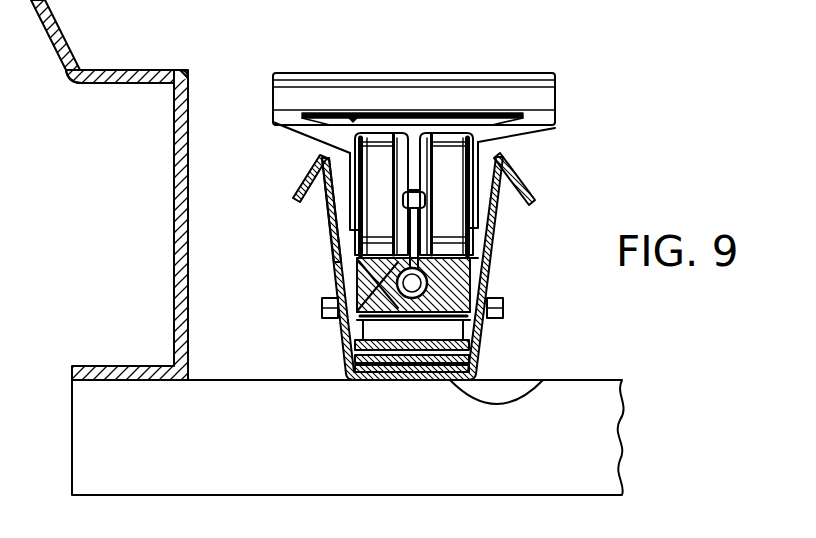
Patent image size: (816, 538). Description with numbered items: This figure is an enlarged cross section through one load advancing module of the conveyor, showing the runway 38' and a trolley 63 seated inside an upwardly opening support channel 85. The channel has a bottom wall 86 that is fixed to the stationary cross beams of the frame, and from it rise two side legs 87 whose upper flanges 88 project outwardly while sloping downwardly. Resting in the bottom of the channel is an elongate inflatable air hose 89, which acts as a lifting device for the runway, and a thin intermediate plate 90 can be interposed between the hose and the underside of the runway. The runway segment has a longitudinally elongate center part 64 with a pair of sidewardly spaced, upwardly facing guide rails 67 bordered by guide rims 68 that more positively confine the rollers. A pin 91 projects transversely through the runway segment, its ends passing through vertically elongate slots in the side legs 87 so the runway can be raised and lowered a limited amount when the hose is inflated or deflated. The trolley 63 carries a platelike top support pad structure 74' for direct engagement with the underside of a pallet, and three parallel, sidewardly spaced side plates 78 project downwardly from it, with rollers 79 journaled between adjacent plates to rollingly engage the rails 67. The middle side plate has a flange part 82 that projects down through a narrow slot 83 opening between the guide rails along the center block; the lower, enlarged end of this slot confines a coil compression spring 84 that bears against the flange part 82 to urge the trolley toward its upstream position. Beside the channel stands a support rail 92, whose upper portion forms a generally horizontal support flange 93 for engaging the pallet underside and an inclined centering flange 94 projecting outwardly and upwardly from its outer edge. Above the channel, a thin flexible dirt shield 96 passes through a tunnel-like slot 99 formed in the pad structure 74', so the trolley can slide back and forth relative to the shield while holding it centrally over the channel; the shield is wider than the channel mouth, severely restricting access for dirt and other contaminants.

The runway 38' is at (399, 63).
The trolley 63 is at (461, 58).
The center part 64 is at (455, 282).
The guide rails 67 is at (462, 258).
The guide rims 68 is at (472, 262).
The top support pad structure 74' is at (450, 96).
The side plates 78 is at (349, 153).
The rollers 79 is at (377, 227).
The flange part 82 is at (402, 246).
The narrow slot 83 is at (322, 304).
The compression spring 84 is at (365, 329).
The support channel 85 is at (322, 225).
The bottom wall 86 is at (550, 371).
The side legs 87 is at (325, 197).
The upper flanges 88 is at (300, 178).
The air hose 89 is at (474, 355).
The intermediate plate 90 is at (358, 348).
The pin 91 is at (498, 308).
The support rail 92 is at (176, 155).
The support flange 93 is at (125, 78).
The centering flange 94 is at (60, 50).
The dirt shield 96 is at (398, 112).
The tunnel-like slot 99 is at (352, 114).